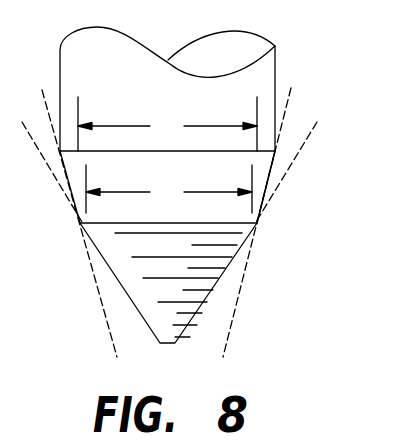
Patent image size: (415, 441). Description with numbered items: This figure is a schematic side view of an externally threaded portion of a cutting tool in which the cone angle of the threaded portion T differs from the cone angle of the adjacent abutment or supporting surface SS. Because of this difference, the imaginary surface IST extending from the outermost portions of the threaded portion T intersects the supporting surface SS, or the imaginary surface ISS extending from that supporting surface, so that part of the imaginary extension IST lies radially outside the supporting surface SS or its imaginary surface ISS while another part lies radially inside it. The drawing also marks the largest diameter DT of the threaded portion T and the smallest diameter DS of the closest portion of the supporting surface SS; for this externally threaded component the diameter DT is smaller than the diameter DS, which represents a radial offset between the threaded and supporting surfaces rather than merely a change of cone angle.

The smallest diameter of the abutment or supporting surface DS is at (167, 124).
The largest diameter of the threaded portion DT is at (169, 189).
The imaginary surface of the abutment or supporting surface ISS is at (290, 100).
The imaginary surface extending from the threaded portion IST is at (298, 148).
The abutment or supporting surface SS is at (264, 162).
The threaded portion T is at (210, 272).